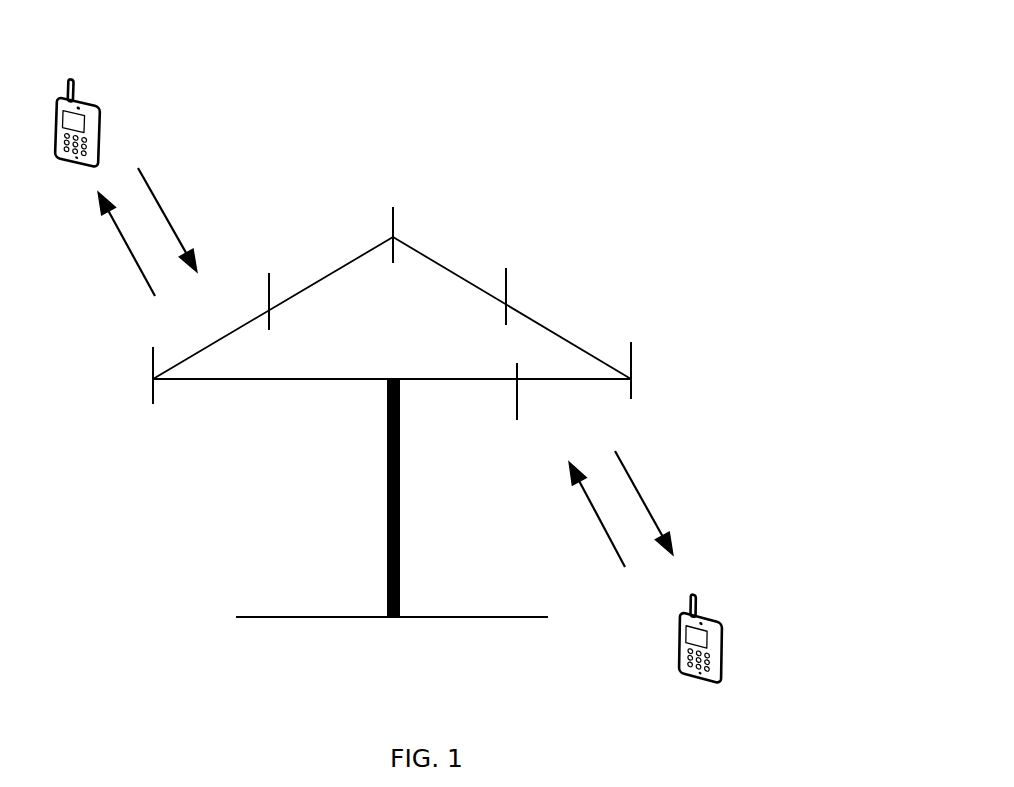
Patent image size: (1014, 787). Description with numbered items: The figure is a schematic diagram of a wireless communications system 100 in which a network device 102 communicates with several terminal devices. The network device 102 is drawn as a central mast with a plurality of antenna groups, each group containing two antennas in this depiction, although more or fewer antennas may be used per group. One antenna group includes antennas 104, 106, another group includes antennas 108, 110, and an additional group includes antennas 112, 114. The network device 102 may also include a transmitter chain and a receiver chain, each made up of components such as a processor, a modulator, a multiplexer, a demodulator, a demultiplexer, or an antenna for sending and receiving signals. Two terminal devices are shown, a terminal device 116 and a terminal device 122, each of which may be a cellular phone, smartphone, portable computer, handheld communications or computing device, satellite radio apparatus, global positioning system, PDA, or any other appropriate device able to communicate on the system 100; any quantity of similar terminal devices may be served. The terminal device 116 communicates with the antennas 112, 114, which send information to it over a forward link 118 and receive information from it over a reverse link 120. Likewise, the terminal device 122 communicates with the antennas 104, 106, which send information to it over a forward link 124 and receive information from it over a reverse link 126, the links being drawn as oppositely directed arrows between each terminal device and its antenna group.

The communications system 100 is at (582, 81).
The network device 102 is at (400, 548).
The antenna 104 is at (155, 387).
The antenna 106 is at (271, 319).
The antenna 108 is at (395, 221).
The antenna 110 is at (509, 286).
The antenna 112 is at (634, 357).
The antenna 114 is at (519, 408).
The terminal device 116 is at (725, 635).
The forward link 118 is at (632, 479).
The reverse link 120 is at (610, 545).
The terminal device 122 is at (100, 102).
The forward link 124 is at (132, 255).
The reverse link 126 is at (153, 195).